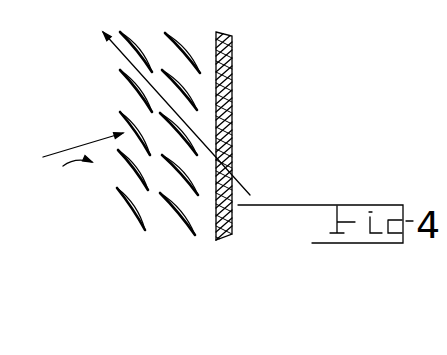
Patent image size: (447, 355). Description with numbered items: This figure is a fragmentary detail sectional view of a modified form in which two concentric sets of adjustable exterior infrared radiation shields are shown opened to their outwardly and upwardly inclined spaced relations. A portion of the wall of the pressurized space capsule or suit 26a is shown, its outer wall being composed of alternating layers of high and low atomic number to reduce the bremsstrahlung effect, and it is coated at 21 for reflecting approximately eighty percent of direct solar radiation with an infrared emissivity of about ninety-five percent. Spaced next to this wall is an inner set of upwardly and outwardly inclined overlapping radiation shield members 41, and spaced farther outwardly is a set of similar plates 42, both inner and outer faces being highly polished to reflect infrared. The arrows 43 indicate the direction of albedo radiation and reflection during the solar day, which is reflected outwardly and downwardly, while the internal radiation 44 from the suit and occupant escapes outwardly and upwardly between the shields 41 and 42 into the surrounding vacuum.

The coating 21 is at (214, 180).
The wall of the pressurized space capsule or suit 26a is at (224, 93).
The radiation shield members 41 is at (178, 44).
The plates 42 is at (128, 48).
The arrows 43 is at (74, 150).
The internal radiation 44 is at (118, 50).